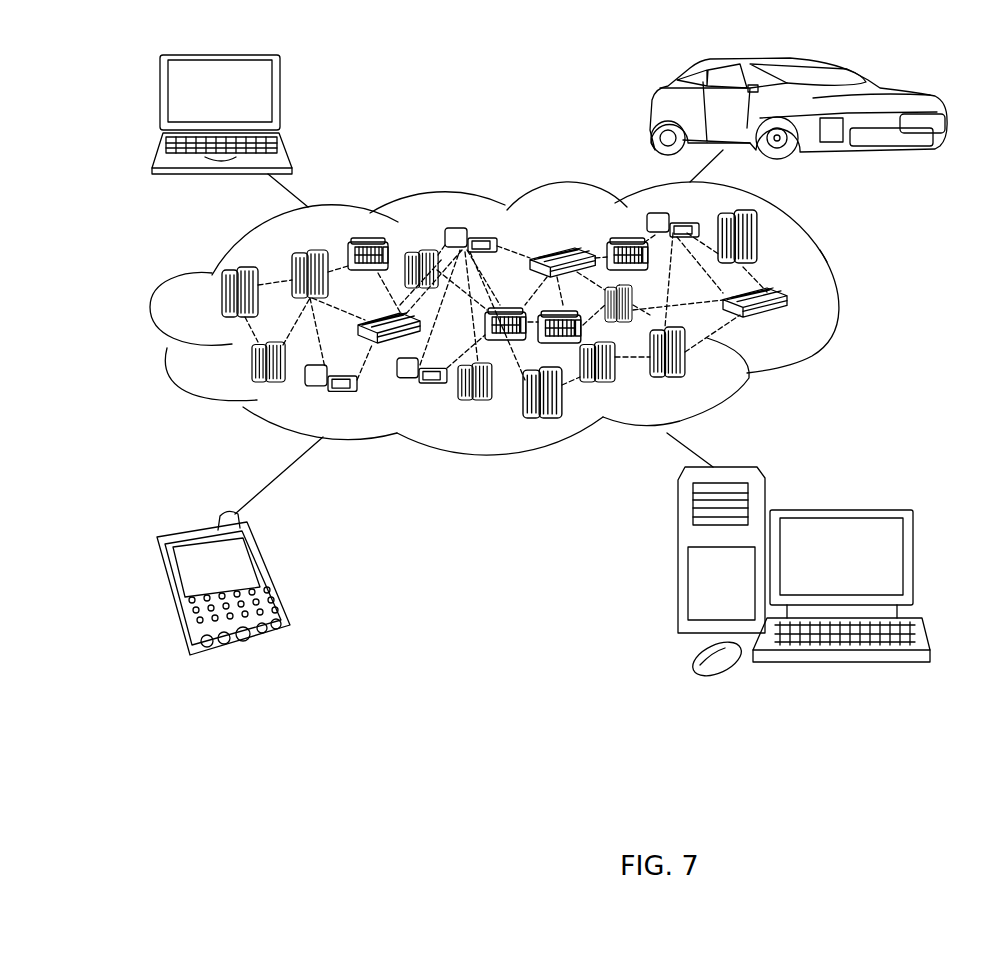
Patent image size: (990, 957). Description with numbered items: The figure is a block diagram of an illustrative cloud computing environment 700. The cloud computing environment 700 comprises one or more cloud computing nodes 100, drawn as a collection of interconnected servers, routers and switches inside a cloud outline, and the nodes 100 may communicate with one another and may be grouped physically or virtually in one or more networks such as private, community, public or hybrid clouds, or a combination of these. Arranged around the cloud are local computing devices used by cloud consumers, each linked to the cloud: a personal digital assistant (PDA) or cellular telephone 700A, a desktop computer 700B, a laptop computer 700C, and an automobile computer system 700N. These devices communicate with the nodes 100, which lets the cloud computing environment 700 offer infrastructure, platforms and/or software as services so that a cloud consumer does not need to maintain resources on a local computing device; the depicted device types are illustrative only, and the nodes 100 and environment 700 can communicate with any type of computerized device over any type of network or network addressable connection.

The cloud computing environment 700 is at (842, 297).
The cloud computing nodes 100 is at (789, 320).
The personal digital assistant (PDA) or cellular telephone 700A is at (272, 575).
The desktop computer 700B is at (838, 508).
The laptop computer 700C is at (284, 100).
The automobile computer system 700N is at (650, 108).